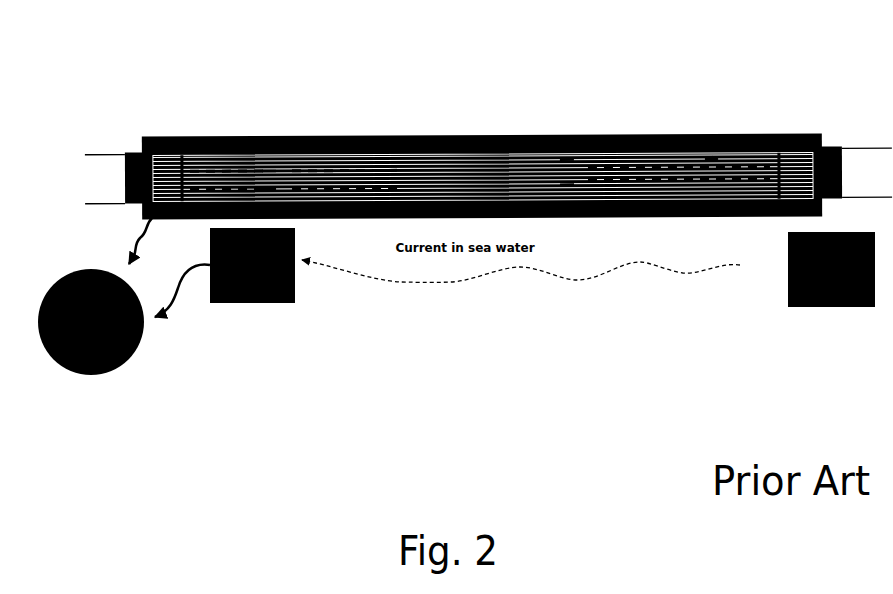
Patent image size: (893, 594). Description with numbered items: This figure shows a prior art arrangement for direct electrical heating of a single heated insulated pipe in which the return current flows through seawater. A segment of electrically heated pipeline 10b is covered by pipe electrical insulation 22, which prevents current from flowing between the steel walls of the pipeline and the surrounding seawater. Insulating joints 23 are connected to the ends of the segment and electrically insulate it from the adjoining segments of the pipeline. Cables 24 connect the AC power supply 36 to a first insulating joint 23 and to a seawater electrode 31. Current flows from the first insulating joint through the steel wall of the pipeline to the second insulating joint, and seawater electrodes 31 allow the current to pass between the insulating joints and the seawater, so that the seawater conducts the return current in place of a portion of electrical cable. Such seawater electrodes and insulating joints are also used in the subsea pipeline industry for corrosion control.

The segment of electrically heated pipeline 10b is at (488, 123).
The pipe electrical insulation 22 is at (482, 133).
The insulating joints 23 is at (157, 135).
The cables 24 is at (130, 243).
The seawater electrodes 31 is at (720, 311).
The AC power supply 36 is at (90, 270).